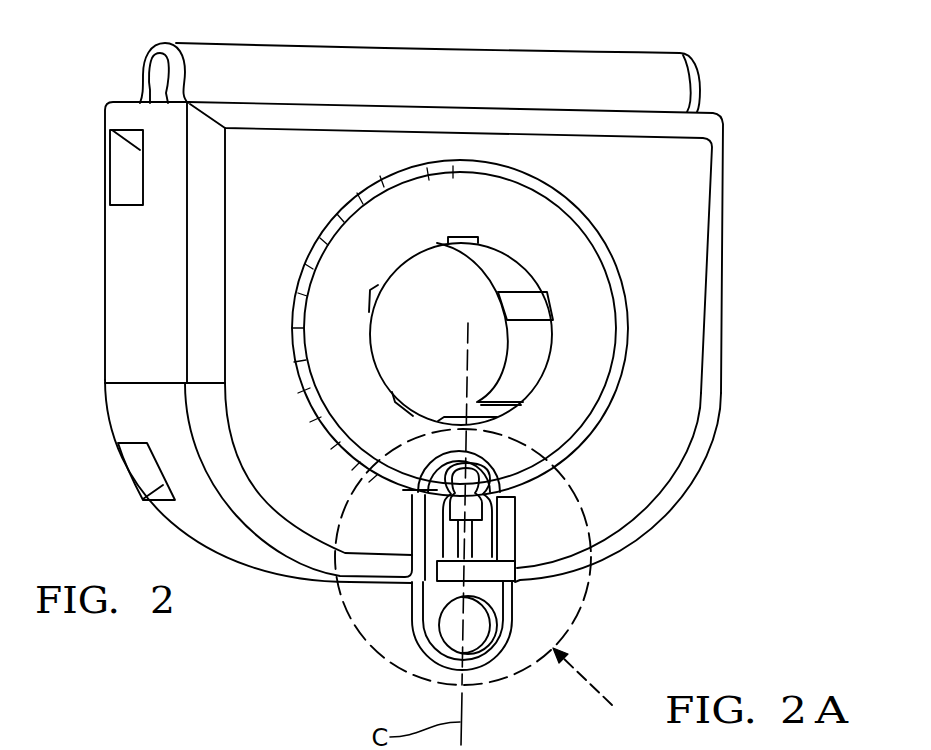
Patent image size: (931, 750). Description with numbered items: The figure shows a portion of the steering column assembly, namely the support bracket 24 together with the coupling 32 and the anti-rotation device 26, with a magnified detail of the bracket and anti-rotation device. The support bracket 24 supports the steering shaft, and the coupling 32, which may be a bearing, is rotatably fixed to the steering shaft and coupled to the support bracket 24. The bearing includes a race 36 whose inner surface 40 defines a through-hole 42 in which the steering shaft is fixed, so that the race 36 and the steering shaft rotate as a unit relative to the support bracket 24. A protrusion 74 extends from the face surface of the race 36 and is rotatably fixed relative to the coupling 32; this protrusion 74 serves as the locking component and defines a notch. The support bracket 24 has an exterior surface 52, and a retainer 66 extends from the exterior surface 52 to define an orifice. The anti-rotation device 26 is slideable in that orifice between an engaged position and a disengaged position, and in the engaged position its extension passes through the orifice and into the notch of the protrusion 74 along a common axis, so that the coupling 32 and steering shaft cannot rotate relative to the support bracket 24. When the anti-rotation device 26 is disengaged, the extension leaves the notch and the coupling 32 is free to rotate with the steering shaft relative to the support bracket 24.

The support bracket 24 is at (680, 187).
The through-hole 42 is at (481, 287).
The race 36 is at (600, 333).
The inner surface 40 is at (528, 378).
The coupling 32 is at (568, 404).
The protrusion 74 is at (438, 502).
The retainer 66 is at (497, 528).
The anti-rotation device 26 is at (503, 605).
The exterior surface 52 is at (295, 490).